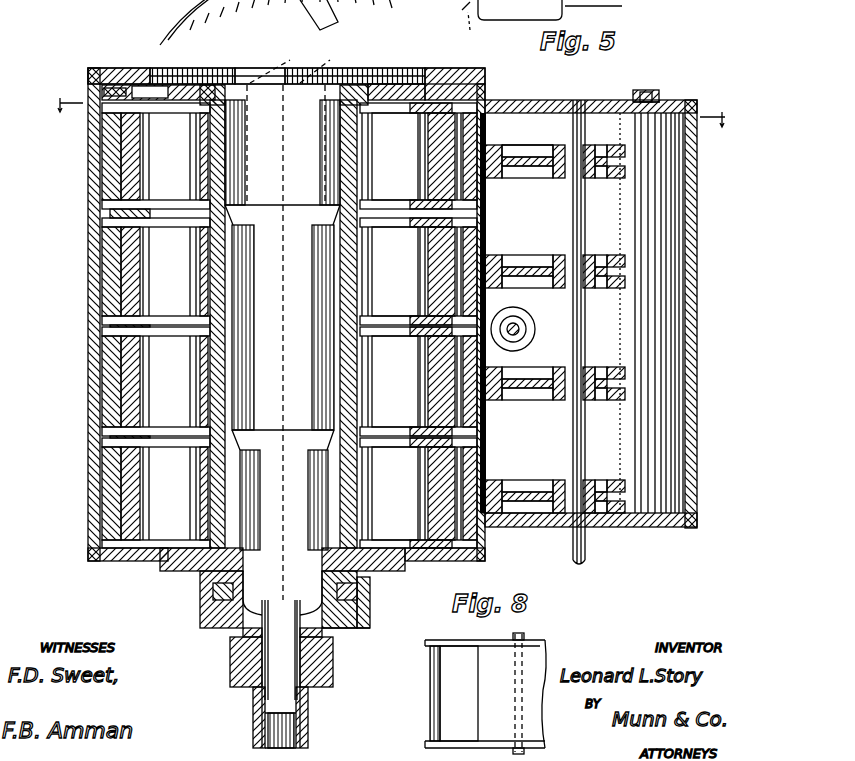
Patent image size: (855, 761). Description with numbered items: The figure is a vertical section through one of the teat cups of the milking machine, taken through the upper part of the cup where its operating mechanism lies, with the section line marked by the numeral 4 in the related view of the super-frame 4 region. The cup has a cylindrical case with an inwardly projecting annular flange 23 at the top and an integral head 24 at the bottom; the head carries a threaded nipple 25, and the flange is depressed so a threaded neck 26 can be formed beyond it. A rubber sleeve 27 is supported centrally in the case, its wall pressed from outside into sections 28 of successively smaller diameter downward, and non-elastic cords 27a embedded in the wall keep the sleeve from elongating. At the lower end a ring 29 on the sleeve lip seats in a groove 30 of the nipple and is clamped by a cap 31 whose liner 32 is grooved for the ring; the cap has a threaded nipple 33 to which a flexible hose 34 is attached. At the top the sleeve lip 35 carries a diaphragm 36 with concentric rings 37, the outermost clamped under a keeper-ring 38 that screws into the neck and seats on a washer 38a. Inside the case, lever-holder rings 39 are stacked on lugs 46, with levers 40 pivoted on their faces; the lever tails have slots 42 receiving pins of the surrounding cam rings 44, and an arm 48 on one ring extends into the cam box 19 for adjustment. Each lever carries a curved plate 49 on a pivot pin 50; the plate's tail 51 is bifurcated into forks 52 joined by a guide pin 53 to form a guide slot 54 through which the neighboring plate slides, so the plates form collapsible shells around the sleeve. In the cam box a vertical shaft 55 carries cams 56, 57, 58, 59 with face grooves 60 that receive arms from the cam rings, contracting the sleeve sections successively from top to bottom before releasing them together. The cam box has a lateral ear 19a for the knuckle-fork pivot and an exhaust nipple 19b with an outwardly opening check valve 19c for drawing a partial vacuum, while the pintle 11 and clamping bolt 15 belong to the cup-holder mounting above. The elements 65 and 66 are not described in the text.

In FIG. 5, the super-frame 4 is at (392, 110).
In FIG. 5, the pintle 11 is at (380, 8).
In FIG. 5, the clamping bolt 15 is at (385, 544).
In FIG. 5, the cam box 19 is at (696, 353).
In FIG. 5, the ear 19a is at (632, 102).
In FIG. 5, the exhaust nipple 19b is at (660, 96).
In FIG. 5, the check valve 19c is at (648, 92).
In FIG. 5, the annular flange 23 is at (163, 68).
In FIG. 5, the head 24 is at (382, 571).
In FIG. 5, the threaded nipple 25 is at (230, 572).
In FIG. 5, the threaded neck 26 is at (98, 84).
In FIG. 5, the sleeve 27 is at (346, 264).
In FIG. 5, the non-elastic cord 27a is at (290, 82).
In FIG. 5, the section 28 is at (282, 330).
In FIG. 5, the ring 29 is at (221, 620).
In FIG. 5, the groove 30 is at (364, 600).
In FIG. 5, the cap 31 is at (350, 636).
In FIG. 5, the liner 32 is at (340, 636).
In FIG. 5, the threaded nipple 33 is at (234, 662).
In FIG. 5, the flexible hose 34 is at (308, 736).
In FIG. 5, the ring 35 is at (228, 82).
In FIG. 5, the diaphragm 36 is at (416, 98).
In FIG. 5, the concentric ring 37 is at (188, 70).
In FIG. 5, the keeper-ring 38 is at (125, 68).
In FIG. 5, the washer 38a is at (102, 82).
In FIG. 5, the ring 39 is at (419, 493).
In FIG. 5, the lever 40 is at (192, 255).
In FIG. 5, the slot 42 is at (471, 5).
In FIG. 5, the cam ring 44 is at (488, 122).
In FIG. 5, the lug 46 is at (397, 200).
In FIG. 5, the arm 48 is at (485, 33).
In FIG. 5, the curved plate 49 is at (190, 278).
In FIG. 5, the pivot pin 50 is at (425, 137).
In FIG. 8, the pivot pin 50 is at (515, 636).
In FIG. 8, the tail 51 is at (566, 694).
In FIG. 8, the fork 52 is at (433, 646).
In FIG. 8, the guide pin 53 is at (431, 722).
In FIG. 8, the guide slot 54 is at (459, 693).
In FIG. 5, the vertical shaft 55 is at (586, 336).
In FIG. 5, the cam 56 is at (542, 176).
In FIG. 5, the cam 57 is at (540, 262).
In FIG. 5, the cam 58 is at (534, 380).
In FIG. 5, the cam 59 is at (540, 486).
In FIG. 5, the groove 60 is at (502, 150).
In FIG. 5, the pivot 65 is at (520, 324).
In FIG. 5, the part 66 is at (564, 10).